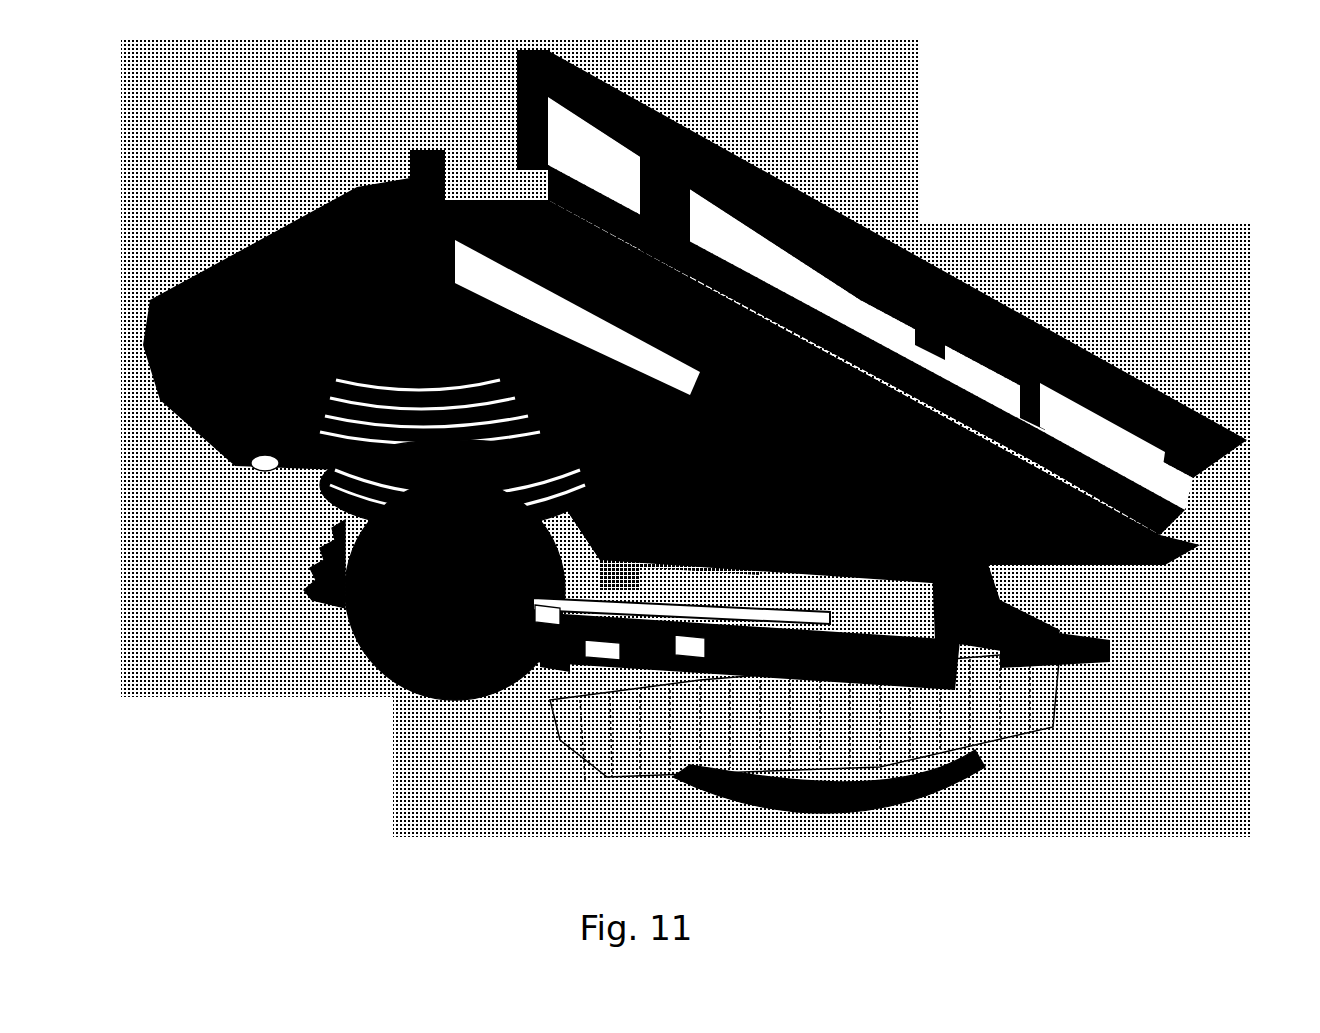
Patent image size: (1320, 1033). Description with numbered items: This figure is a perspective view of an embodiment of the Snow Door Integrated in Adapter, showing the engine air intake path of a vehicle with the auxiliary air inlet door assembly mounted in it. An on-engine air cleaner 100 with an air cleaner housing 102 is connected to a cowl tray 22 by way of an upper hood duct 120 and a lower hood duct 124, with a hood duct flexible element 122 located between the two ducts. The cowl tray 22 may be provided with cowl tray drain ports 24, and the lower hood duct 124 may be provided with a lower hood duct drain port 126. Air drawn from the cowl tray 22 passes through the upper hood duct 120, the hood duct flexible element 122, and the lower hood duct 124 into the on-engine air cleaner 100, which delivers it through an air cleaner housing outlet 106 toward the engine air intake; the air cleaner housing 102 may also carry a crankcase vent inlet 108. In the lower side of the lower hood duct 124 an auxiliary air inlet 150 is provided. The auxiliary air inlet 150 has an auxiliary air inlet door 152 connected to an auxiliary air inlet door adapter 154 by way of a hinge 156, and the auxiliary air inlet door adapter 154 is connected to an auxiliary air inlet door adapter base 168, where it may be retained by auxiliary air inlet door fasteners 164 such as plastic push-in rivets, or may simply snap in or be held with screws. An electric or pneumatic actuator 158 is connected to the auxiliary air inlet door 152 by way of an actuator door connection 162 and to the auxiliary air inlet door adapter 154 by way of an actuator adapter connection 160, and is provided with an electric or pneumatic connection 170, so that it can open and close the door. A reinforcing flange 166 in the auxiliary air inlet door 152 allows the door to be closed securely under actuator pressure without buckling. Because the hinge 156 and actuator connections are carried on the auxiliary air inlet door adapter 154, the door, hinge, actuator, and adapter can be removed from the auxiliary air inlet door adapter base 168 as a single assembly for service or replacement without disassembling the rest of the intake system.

The cowl tray 22 is at (265, 240).
The cowl tray drain ports 24 is at (252, 470).
The on-engine air cleaner 100 is at (973, 720).
The air cleaner housing 102 is at (1013, 713).
The air cleaner housing outlet 106 is at (943, 813).
The crankcase vent inlet 108 is at (1110, 650).
The upper hood duct 120 is at (340, 402).
The hood duct flexible element 122 is at (318, 515).
The lower hood duct 124 is at (350, 622).
The lower hood duct drain port 126 is at (540, 615).
The auxiliary air inlet 150 is at (700, 605).
The auxiliary air inlet door 152 is at (713, 633).
The auxiliary air inlet door adapter 154 is at (730, 606).
The hinge 156 is at (540, 620).
The electric or pneumatic actuator 158 is at (595, 650).
The actuator adapter connection 160 is at (545, 665).
The actuator door connection 162 is at (687, 645).
The auxiliary air inlet door fasteners 164 is at (670, 603).
The reinforcing flange 166 is at (640, 612).
The auxiliary air inlet door adapter base 168 is at (762, 604).
The electric or pneumatic connection 170 is at (625, 578).